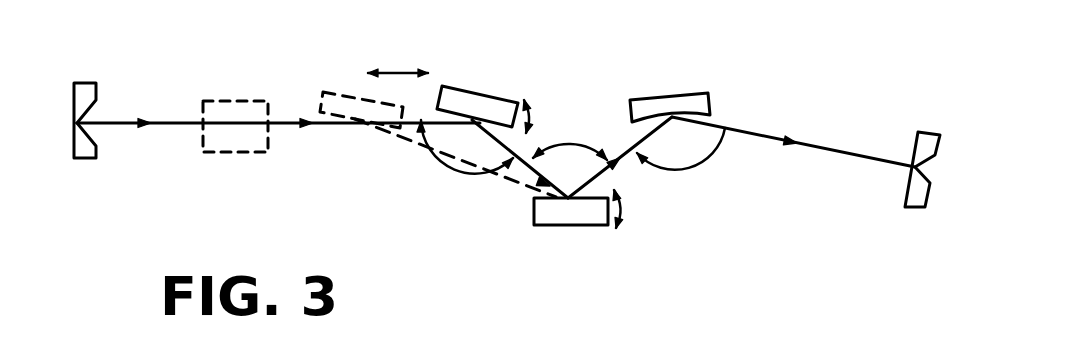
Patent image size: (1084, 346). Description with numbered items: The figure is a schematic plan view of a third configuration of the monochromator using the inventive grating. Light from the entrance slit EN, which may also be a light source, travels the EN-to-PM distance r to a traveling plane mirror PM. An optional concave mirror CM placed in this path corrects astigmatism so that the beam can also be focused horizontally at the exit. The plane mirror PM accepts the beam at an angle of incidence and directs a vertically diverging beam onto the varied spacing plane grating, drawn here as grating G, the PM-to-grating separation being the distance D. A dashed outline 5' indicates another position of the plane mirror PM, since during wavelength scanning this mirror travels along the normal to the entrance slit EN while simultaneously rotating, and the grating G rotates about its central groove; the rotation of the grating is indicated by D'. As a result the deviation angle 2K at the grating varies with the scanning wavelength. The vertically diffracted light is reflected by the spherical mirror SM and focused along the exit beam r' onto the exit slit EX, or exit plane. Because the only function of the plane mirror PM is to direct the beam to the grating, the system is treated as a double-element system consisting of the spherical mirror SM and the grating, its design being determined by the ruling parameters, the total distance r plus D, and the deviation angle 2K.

The entrance slit EN is at (104, 85).
The EN-to-PM distance r is at (278, 98).
The optional concave mirror CM is at (235, 100).
The alternate position of plane mirror 5' is at (431, 109).
The plane mirror PM is at (502, 102).
The PM-PG distance D is at (544, 107).
The deviation angle of the grating 2K is at (575, 114).
The grating G is at (603, 200).
The displacement of grating D' is at (644, 191).
The spherical mirror SM is at (684, 81).
The exit light beam r' is at (793, 133).
The exit slit EX is at (925, 143).